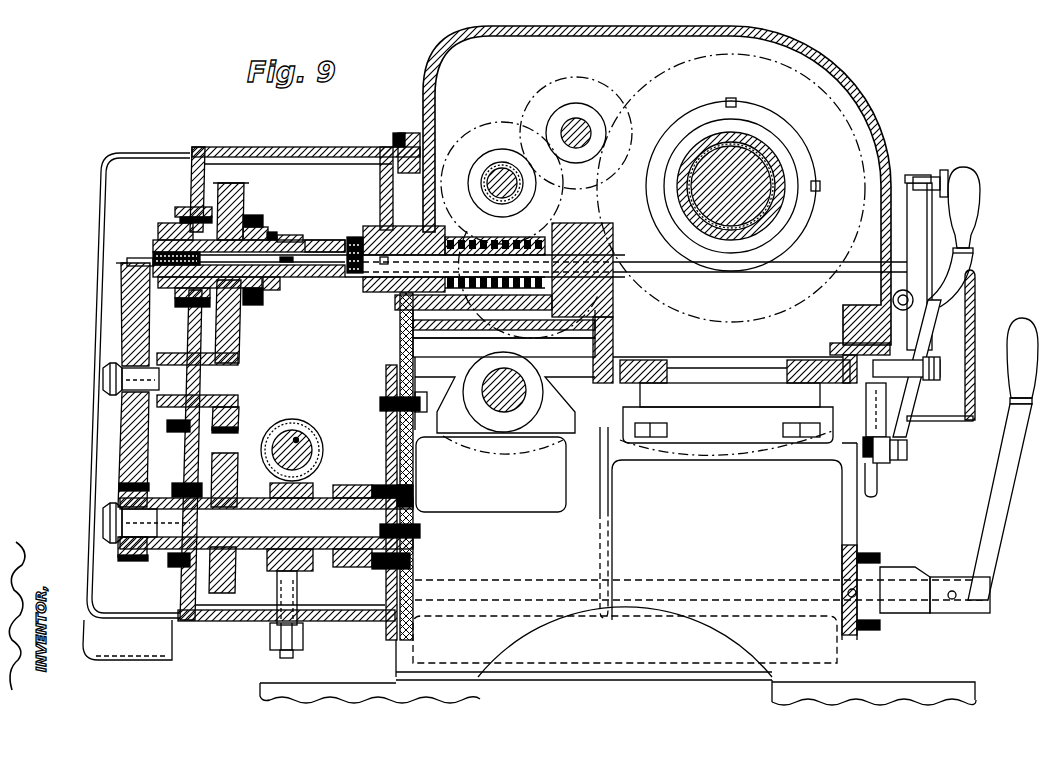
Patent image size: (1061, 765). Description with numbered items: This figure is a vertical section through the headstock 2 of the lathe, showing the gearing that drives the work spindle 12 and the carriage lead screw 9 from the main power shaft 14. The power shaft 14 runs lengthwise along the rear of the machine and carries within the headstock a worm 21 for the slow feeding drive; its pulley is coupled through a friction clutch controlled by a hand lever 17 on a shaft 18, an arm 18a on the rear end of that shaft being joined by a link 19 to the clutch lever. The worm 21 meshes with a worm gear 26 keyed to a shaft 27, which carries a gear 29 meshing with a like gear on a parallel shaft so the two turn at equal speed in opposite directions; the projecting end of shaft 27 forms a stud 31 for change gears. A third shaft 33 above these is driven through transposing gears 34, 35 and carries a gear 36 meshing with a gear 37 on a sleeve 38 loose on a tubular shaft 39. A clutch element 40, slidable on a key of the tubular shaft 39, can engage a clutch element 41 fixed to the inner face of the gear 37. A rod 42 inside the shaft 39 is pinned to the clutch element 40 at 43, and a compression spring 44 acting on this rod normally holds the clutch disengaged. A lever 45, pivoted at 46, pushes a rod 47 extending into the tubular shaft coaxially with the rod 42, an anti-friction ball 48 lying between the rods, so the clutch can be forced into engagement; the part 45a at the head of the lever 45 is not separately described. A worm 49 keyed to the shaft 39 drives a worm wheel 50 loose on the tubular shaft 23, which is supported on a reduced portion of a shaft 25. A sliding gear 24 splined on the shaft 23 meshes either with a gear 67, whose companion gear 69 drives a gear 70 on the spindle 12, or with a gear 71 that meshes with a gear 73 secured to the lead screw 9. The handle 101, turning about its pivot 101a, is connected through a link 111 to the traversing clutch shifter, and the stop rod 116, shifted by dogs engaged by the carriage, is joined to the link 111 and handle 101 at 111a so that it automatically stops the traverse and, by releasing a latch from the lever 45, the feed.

The headstock 2 is at (613, 40).
The lead screw 9 is at (503, 410).
The work spindle 12 is at (783, 175).
The main power shaft 14 is at (294, 440).
The hand lever 17 is at (1003, 500).
The shaft 18 is at (535, 576).
The arm 18a is at (278, 623).
The link 19 is at (290, 650).
The worm 21 is at (322, 455).
The tubular shaft 23 is at (492, 192).
The sliding gear 24 is at (505, 150).
The shaft 25 is at (523, 190).
The worm gear 26 is at (310, 485).
The shaft 27 is at (398, 467).
The gear 29 is at (213, 597).
The stud 31 is at (105, 520).
The shaft 33 is at (140, 385).
The transposing gear 34 is at (133, 560).
The transposing gear 35 is at (123, 318).
The gear 36 is at (237, 422).
The gear 37 is at (240, 323).
The sleeve 38 is at (160, 250).
The tubular shaft 39 is at (330, 250).
The clutch element 40 is at (290, 243).
The clutch element 41 is at (282, 230).
The rod 42 is at (323, 262).
The pin connection 43 is at (283, 277).
The compression spring 44 is at (178, 225).
The lever 45 is at (920, 228).
The lever pivot 45a is at (945, 170).
The pivot 46 is at (913, 300).
The rod 47 is at (660, 272).
The anti-friction ball 48 is at (383, 258).
The worm 49 is at (525, 330).
The worm wheel 50 is at (472, 133).
The gear 67 is at (612, 95).
The gear 69 is at (573, 102).
The gear 70 is at (813, 83).
The gear 71 is at (600, 325).
The gear 73 is at (537, 375).
The handle 101 is at (972, 185).
The pivot 101a is at (940, 370).
The link 111 is at (880, 460).
The connection 111a is at (907, 447).
The stop rod 116 is at (865, 490).